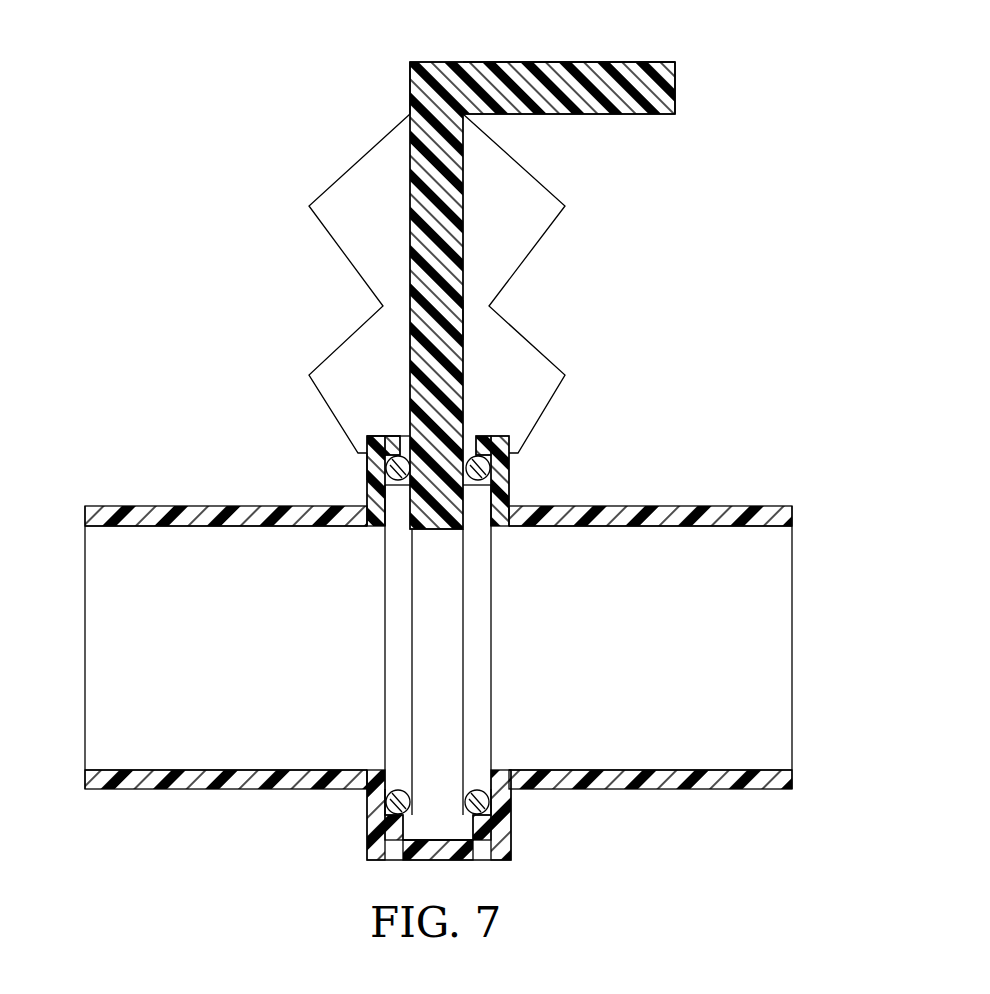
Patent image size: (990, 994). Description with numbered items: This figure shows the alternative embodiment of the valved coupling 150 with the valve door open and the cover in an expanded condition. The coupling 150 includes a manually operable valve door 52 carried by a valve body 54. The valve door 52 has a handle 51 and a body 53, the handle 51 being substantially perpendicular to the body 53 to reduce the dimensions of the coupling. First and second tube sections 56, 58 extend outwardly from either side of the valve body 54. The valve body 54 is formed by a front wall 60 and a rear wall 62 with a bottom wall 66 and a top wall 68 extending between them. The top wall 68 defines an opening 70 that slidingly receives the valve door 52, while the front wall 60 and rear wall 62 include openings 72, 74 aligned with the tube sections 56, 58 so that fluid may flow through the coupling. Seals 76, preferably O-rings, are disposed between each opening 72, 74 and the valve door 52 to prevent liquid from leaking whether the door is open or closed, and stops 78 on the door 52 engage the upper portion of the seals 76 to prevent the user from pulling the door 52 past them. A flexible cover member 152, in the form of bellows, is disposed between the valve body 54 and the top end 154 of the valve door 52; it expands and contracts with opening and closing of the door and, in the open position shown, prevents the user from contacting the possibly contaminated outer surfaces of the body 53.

The handle 51 is at (637, 62).
The valve door 52 is at (470, 207).
The body 53 is at (438, 322).
The valve body 54 is at (368, 848).
The first tube section 56 is at (670, 506).
The second tube section 58 is at (142, 517).
The front wall 60 is at (497, 473).
The rear wall 62 is at (367, 464).
The bottom wall 66 is at (485, 853).
The top wall 68 is at (380, 434).
The opening 70 is at (404, 437).
The opening 72 is at (505, 636).
The opening 74 is at (356, 665).
The seals 76 is at (395, 585).
The stops 78 is at (393, 494).
The coupling 150 is at (897, 167).
The cover member 152 is at (342, 255).
The top end 154 is at (417, 87).